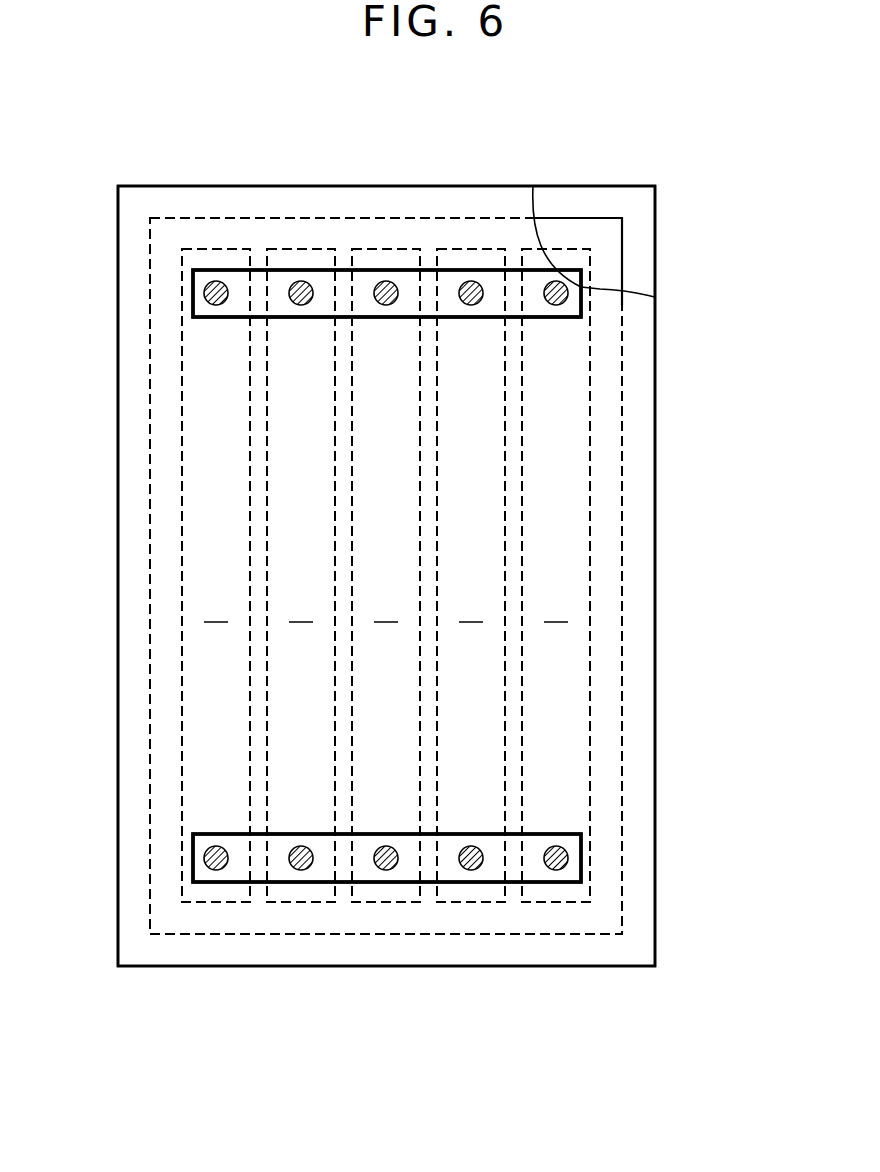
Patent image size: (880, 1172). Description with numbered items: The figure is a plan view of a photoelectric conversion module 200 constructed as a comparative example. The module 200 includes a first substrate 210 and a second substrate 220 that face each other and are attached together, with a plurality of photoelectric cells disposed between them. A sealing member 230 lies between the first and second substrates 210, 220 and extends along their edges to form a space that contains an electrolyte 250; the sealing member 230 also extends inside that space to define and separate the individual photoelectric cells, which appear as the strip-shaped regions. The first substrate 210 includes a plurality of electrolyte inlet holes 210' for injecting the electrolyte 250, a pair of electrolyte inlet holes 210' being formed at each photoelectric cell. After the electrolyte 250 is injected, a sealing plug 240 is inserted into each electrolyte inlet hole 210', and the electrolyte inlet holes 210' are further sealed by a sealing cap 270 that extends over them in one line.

The photoelectric conversion module 200 is at (634, 172).
The first substrate 210 is at (386, 539).
The electrolyte inlet holes 210' is at (350, 534).
The second substrate 220 is at (643, 236).
The sealing member 230 is at (580, 235).
The sealing plug 240 is at (300, 282).
The electrolyte 250 is at (568, 410).
The sealing cap 270 is at (220, 272).